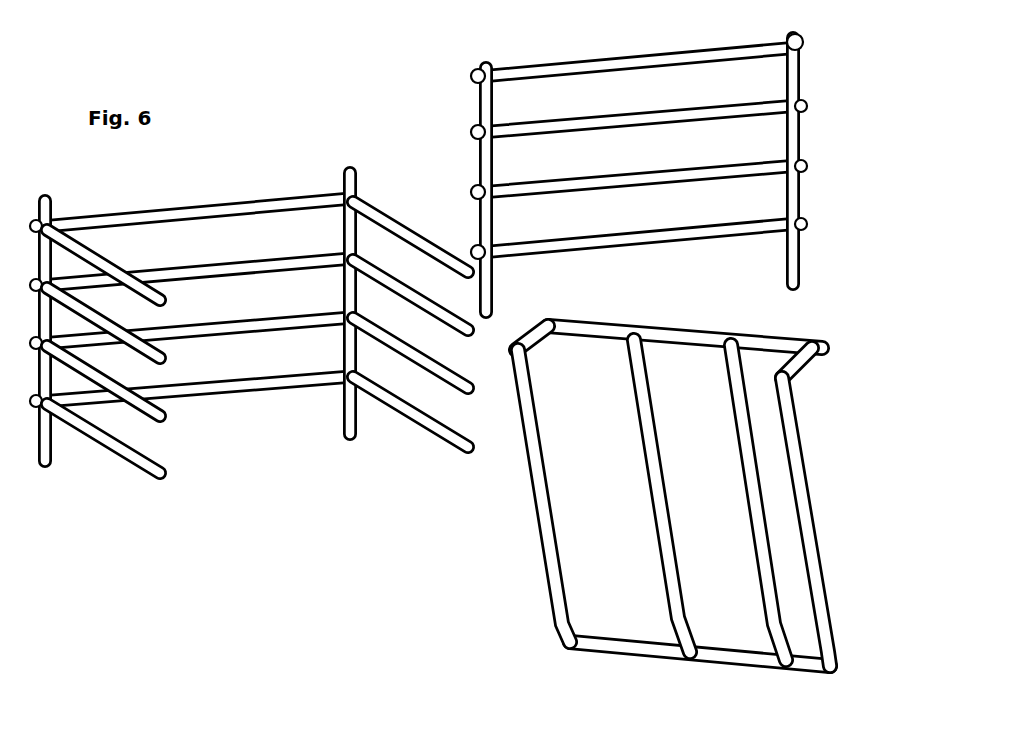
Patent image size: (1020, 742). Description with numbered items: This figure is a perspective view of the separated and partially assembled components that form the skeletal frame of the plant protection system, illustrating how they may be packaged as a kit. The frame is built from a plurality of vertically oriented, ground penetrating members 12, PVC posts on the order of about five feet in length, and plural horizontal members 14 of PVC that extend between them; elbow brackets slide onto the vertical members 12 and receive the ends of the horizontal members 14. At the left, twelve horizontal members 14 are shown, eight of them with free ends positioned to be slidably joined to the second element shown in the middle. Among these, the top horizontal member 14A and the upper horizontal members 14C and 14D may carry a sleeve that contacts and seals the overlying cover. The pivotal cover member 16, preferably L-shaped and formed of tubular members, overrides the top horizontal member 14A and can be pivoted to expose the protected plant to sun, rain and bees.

The vertically oriented, ground penetrating member 12 is at (52, 403).
The horizontal member 14 is at (192, 393).
The top horizontal member 14A is at (230, 208).
The upper horizontal member 14C is at (123, 272).
The upper horizontal member 14D is at (372, 208).
The pivotal cover member 16 is at (548, 456).